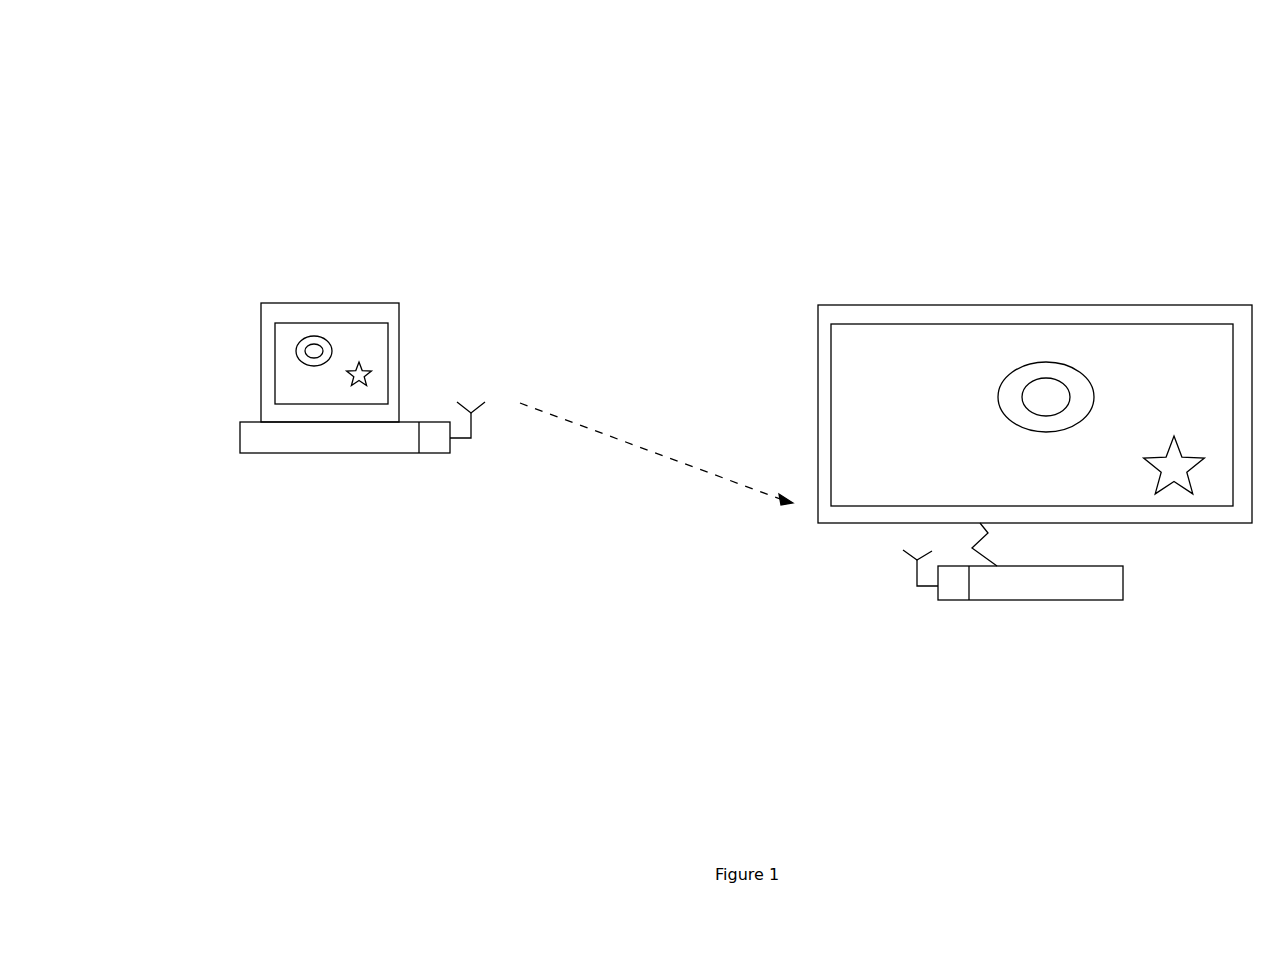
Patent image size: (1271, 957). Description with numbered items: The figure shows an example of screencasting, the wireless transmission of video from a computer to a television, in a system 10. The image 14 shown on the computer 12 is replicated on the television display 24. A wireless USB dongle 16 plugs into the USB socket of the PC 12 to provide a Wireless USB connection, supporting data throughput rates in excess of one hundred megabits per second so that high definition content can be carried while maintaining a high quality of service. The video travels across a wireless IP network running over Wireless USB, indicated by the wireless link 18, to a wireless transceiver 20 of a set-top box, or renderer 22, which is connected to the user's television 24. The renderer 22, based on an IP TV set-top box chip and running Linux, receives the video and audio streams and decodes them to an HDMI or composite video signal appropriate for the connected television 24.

The system 10 is at (275, 122).
The computer 12 is at (241, 422).
The image 14 is at (323, 330).
The wireless USB dongle 16 is at (447, 453).
The wireless link 18 is at (650, 487).
The wireless transceiver 20 is at (960, 600).
The set-top box renderer 22 is at (1013, 600).
The television display 24 is at (1035, 323).